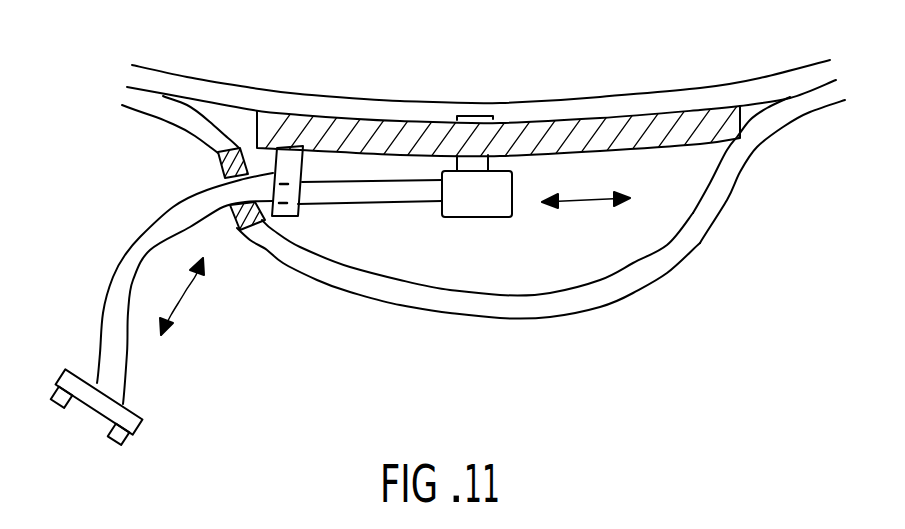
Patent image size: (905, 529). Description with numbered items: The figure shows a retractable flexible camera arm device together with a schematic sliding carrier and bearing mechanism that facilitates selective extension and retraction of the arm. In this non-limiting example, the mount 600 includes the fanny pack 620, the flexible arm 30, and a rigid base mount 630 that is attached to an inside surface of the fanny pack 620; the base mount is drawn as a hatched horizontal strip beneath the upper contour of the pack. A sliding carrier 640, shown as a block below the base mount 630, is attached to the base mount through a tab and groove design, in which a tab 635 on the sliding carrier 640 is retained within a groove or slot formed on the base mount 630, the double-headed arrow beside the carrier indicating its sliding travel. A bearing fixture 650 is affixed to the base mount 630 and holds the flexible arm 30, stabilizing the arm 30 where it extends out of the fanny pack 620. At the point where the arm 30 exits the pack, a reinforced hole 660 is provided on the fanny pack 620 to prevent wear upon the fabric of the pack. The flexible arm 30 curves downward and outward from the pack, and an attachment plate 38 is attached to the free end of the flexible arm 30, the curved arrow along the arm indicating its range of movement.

The flexible arm 30 is at (150, 230).
The attachment plate 38 is at (143, 420).
The mount 600 is at (706, 207).
The fanny pack 620 is at (571, 303).
The rigid base mount 630 is at (473, 133).
The tab 635 is at (475, 117).
The sliding carrier 640 is at (490, 183).
The bearing fixture 650 is at (293, 157).
The reinforced hole 660 is at (220, 174).